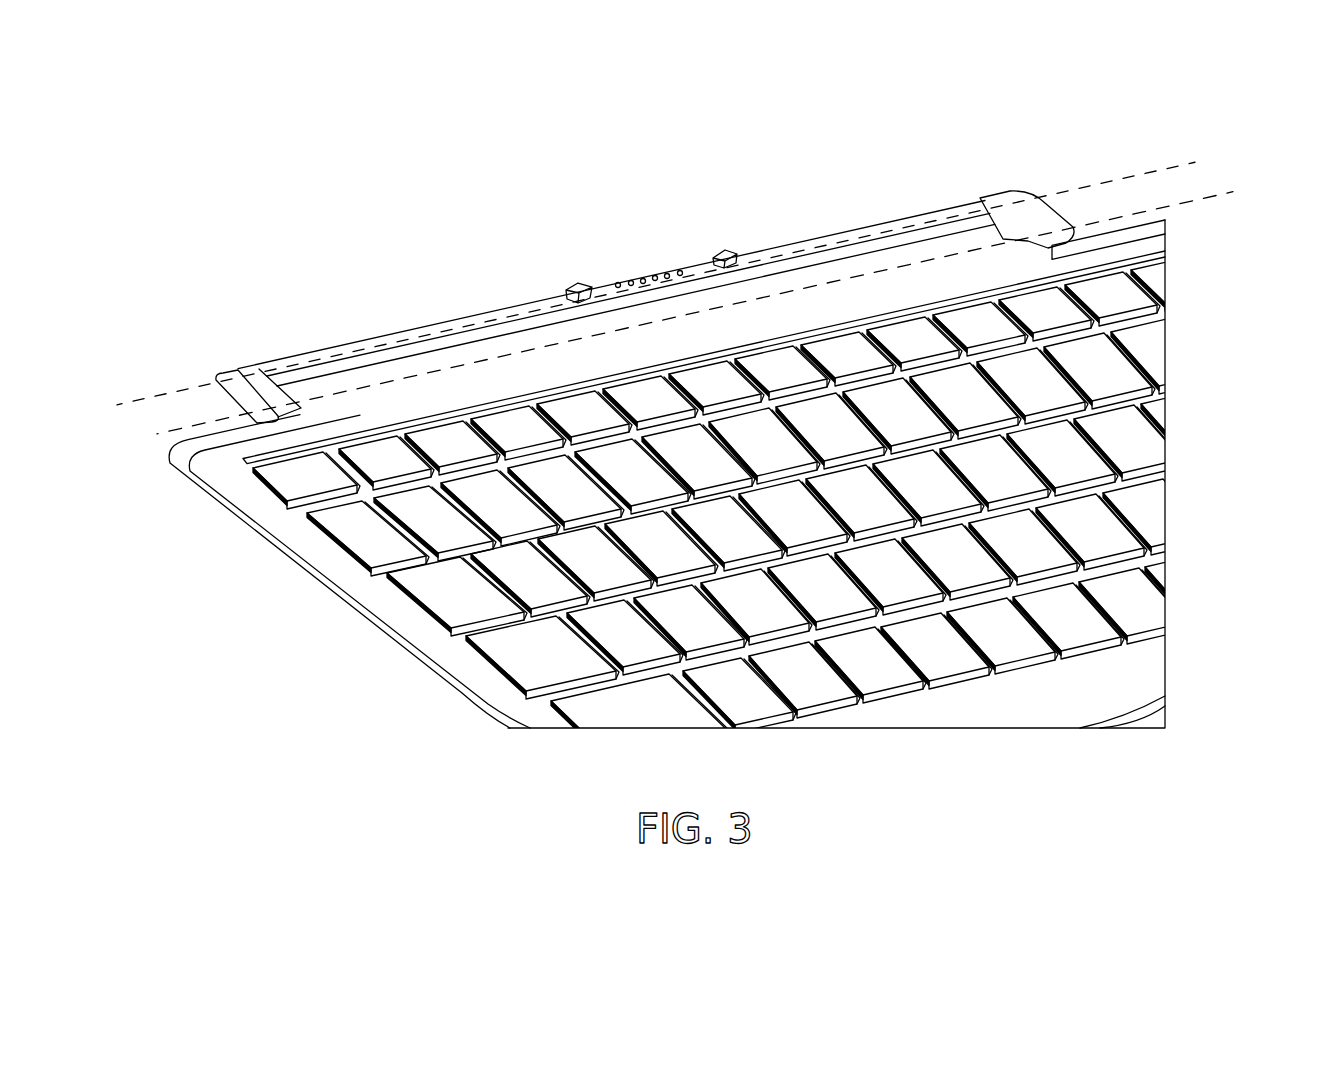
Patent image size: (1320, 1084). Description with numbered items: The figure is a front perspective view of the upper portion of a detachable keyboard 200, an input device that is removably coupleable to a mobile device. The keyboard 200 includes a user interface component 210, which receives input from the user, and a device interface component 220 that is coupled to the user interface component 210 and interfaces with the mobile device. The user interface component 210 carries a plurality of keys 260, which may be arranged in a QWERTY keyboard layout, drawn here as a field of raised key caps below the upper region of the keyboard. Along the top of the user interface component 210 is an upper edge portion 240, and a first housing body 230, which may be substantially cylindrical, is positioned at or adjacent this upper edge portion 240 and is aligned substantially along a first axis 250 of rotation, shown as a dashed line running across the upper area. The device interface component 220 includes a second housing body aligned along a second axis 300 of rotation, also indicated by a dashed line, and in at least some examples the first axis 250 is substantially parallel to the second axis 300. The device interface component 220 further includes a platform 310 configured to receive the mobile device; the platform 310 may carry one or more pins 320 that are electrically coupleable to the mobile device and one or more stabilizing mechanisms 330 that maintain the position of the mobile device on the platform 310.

The detachable keyboard 200 is at (701, 467).
The user interface component 210 is at (749, 507).
The device interface component 220 is at (701, 288).
The first housing body 230 is at (304, 413).
The upper edge portion 240 is at (1108, 228).
The first axis of rotation 250 is at (1213, 198).
The keys 260 is at (457, 533).
The second axis of rotation 300 is at (1175, 168).
The platform 310 is at (968, 196).
The pins 320 is at (652, 272).
The stabilizing mechanisms 330 is at (578, 283).